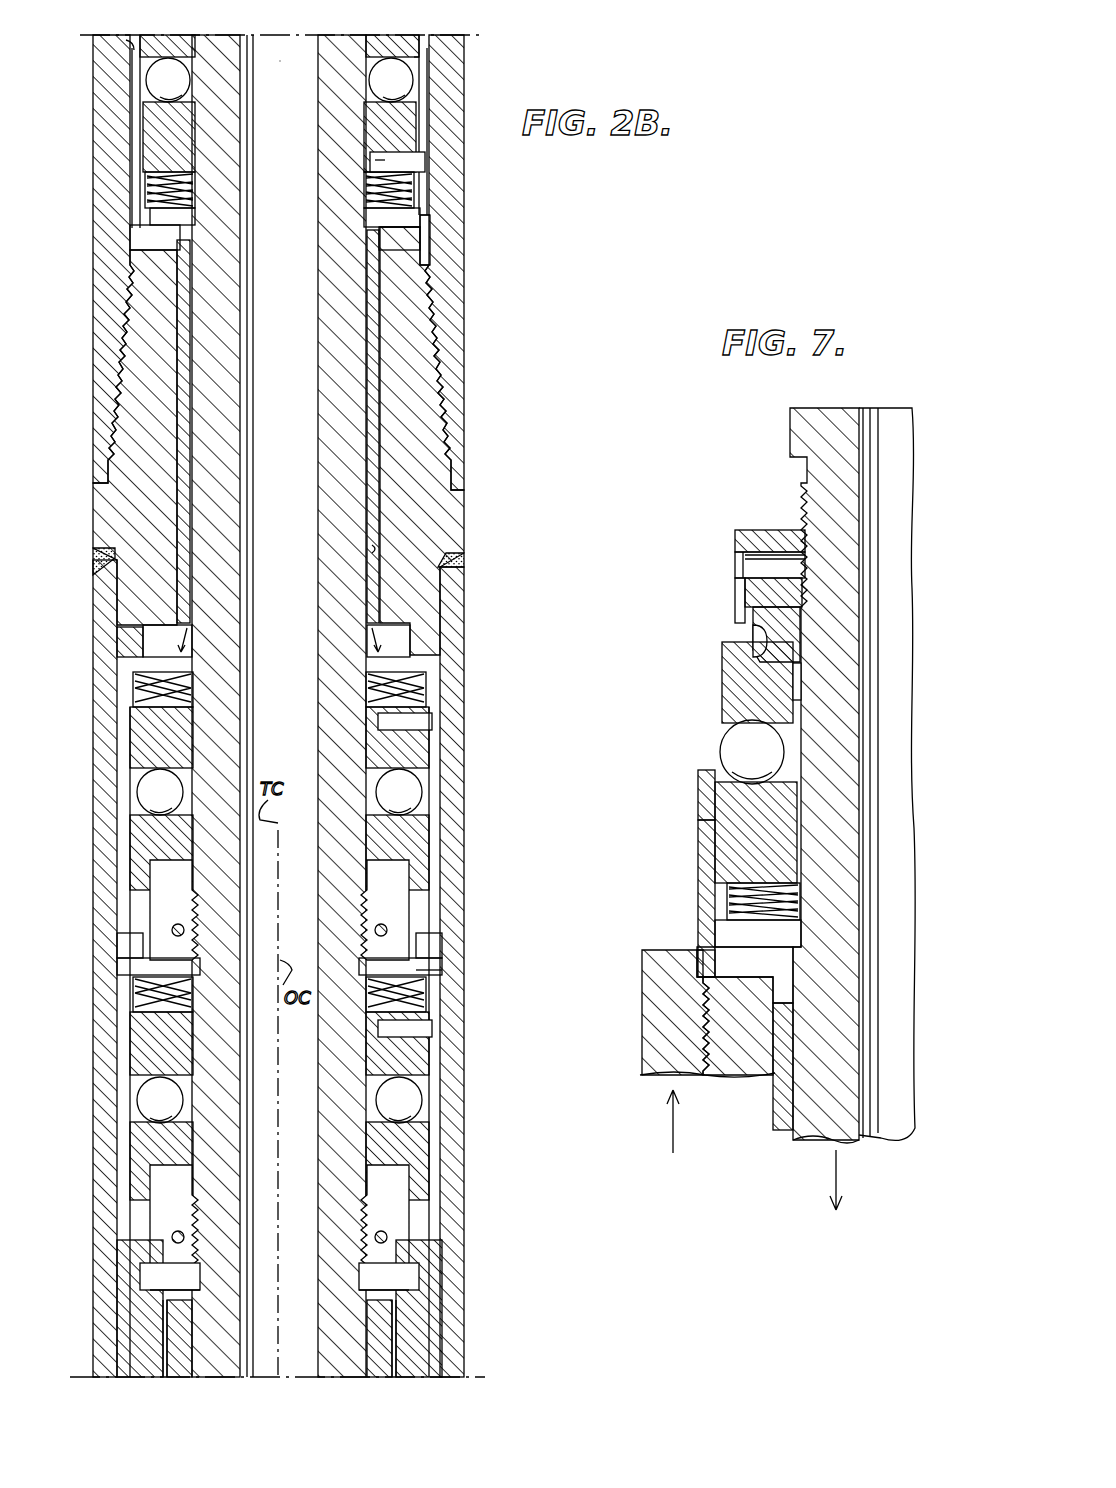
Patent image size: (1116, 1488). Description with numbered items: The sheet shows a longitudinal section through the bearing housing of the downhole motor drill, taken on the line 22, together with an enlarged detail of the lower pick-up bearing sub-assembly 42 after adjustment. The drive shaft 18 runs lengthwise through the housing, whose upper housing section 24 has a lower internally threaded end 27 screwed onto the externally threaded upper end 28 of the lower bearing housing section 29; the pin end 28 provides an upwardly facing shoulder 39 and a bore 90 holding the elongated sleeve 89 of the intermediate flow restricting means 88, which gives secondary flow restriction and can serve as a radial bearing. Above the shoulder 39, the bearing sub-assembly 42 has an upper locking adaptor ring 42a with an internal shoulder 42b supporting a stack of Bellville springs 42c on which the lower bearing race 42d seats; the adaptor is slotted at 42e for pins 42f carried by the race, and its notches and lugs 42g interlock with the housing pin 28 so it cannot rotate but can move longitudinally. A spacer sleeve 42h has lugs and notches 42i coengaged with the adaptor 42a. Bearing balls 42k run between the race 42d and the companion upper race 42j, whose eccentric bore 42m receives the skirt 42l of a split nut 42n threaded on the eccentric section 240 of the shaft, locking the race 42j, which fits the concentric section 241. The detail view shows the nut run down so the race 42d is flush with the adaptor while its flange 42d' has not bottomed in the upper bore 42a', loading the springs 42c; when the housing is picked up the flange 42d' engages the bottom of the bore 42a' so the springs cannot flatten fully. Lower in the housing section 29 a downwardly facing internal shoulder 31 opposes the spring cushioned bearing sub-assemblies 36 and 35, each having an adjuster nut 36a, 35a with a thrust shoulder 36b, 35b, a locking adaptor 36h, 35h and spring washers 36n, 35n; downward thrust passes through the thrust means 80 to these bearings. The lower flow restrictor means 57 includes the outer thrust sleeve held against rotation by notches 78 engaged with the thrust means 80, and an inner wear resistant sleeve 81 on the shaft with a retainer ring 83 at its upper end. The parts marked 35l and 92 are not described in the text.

In FIG. 2B, the drive shaft 18 is at (322, 520).
In FIG. 7, the drive shaft 18 is at (846, 410).
In FIG. 2B, the central bore 22 is at (288, 382).
In FIG. 2B, the upper housing section 24 is at (105, 104).
In FIG. 2B, the lower internally threaded end 27 is at (453, 408).
In FIG. 7, the lower internally threaded end 27 is at (643, 1013).
In FIG. 2B, the externally threaded upper end 28 is at (416, 443).
In FIG. 7, the externally threaded upper end 28 is at (728, 1065).
In FIG. 2B, the lower bearing housing section 29 is at (108, 983).
In FIG. 2B, the downwardly facing internal shoulder 31 is at (421, 653).
In FIG. 2B, the bearing sub-assembly 35 is at (128, 1145).
In FIG. 2B, the adjuster nut 35a is at (380, 1199).
In FIG. 2B, the shoulder 35b is at (165, 1154).
In FIG. 2B, the locking adaptor 35h is at (426, 973).
In FIG. 2B, the lower ball lock 35l is at (438, 1108).
In FIG. 2B, the spring washers 35n is at (400, 1000).
In FIG. 2B, the bearing sub-assembly 36 is at (432, 758).
In FIG. 2B, the adjuster nut 36a is at (396, 937).
In FIG. 2B, the shoulder 36b is at (377, 861).
In FIG. 2B, the locking adaptor 36h is at (424, 685).
In FIG. 2B, the spring washers 36n is at (135, 688).
In FIG. 2B, the upwardly facing shoulder 39 is at (418, 248).
In FIG. 7, the upwardly facing shoulder 39 is at (736, 946).
In FIG. 7, the lower bearing sub-assembly 42 is at (700, 710).
In FIG. 2B, the upper locking adaptor ring 42a is at (344, 198).
In FIG. 7, the upper locking adaptor ring 42a is at (686, 904).
In FIG. 7, the upper bore 42a' is at (657, 884).
In FIG. 2B, the internal shoulder 42b is at (434, 252).
In FIG. 2B, the Bellville springs 42c is at (150, 188).
In FIG. 7, the Bellville springs 42c is at (735, 895).
In FIG. 2B, the lower bearing race 42d is at (279, 137).
In FIG. 7, the lower bearing race 42d is at (697, 832).
In FIG. 7, the outwardly projecting enlargement 42d' is at (657, 793).
In FIG. 2B, the longitudinal slot 42e is at (428, 152).
In FIG. 2B, the pins 42f is at (386, 163).
In FIG. 2B, the notches and lugs 42g is at (132, 238).
In FIG. 7, the notches and lugs 42g is at (695, 958).
In FIG. 2B, the spacer sleeve 42h is at (423, 48).
In FIG. 2B, the lugs and notches 42i is at (126, 42).
In FIG. 2B, the upper race 42j is at (185, 42).
In FIG. 7, the upper race 42j is at (728, 682).
In FIG. 2B, the bearing balls 42k is at (408, 86).
In FIG. 7, the bearing balls 42k is at (733, 752).
In FIG. 7, the skirt 42l is at (758, 624).
In FIG. 7, the eccentric bore 42m is at (752, 632).
In FIG. 7, the split nut 42n is at (757, 530).
In FIG. 2B, the lower flow restrictor means 57 is at (426, 1336).
In FIG. 2B, the notches 78 is at (120, 1250).
In FIG. 2B, the thrust means 80 is at (434, 1168).
In FIG. 2B, the inner wear resistant sleeve 81 is at (376, 1365).
In FIG. 2B, the retainer ring 83 is at (378, 1290).
In FIG. 2B, the intermediate flow restricting means 88 is at (380, 512).
In FIG. 2B, the elongated sleeve 89 is at (374, 350).
In FIG. 7, the elongated sleeve 89 is at (776, 1112).
In FIG. 2B, the bore 90 is at (375, 548).
In FIG. 2B, the wiper seal 92 is at (150, 625).
In FIG. 7, the eccentric section of the shaft 240 is at (810, 559).
In FIG. 7, the concentric section of the shaft 241 is at (820, 760).